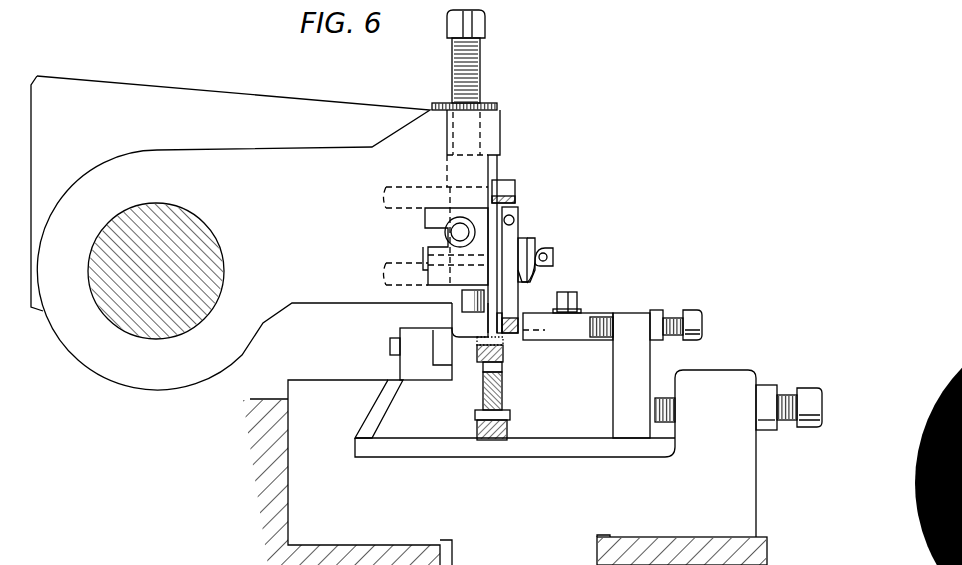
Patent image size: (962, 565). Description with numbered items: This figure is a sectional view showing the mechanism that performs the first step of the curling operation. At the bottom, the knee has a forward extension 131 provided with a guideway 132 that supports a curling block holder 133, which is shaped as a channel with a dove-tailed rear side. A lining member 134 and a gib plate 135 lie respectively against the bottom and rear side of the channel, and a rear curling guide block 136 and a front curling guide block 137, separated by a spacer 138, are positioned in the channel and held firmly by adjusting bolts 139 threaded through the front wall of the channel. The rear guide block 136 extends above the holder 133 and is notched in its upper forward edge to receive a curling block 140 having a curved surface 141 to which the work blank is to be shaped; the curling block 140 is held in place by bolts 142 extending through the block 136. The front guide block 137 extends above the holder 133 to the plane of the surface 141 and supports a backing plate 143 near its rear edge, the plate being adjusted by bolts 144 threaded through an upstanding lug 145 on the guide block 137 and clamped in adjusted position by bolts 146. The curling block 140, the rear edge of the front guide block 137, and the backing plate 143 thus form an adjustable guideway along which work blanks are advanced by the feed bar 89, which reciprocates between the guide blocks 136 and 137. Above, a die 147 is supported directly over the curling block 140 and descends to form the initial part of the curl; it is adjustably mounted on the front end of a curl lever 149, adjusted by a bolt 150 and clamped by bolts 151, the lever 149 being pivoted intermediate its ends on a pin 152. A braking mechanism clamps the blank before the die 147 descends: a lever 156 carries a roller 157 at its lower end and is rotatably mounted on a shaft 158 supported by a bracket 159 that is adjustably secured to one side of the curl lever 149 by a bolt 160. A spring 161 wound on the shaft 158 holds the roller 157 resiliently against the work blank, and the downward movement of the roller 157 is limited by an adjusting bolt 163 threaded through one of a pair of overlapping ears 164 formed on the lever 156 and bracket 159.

The feed bar 89 is at (505, 395).
The forward extension 131 is at (770, 564).
The guideway 132 is at (600, 555).
The curling block holder 133 is at (748, 505).
The lining member 134 is at (443, 455).
The gib plate 135 is at (378, 408).
The rear curling guide block 136 is at (425, 430).
The front curling guide block 137 is at (613, 427).
The spacer 138 is at (497, 442).
The adjusting bolts 139 is at (805, 390).
The curling block 140 is at (448, 357).
The curved surface 141 is at (452, 337).
The bolts 142 is at (395, 338).
The backing plate 143 is at (585, 320).
The bolts 144 is at (690, 314).
The upstanding lug 145 is at (630, 318).
The bolts 146 is at (572, 292).
The die 147 is at (460, 322).
The curl lever 149 is at (317, 103).
The bolt 150 is at (480, 27).
The bolts 151 is at (506, 186).
The pin 152 is at (210, 248).
The lever 156 is at (518, 232).
The roller 157 is at (500, 315).
The shaft 158 is at (553, 262).
The bracket 159 is at (428, 275).
The bolt 160 is at (455, 232).
The spring 161 is at (528, 248).
The adjusting bolt 163 is at (518, 212).
The overlapping ears 164 is at (520, 208).